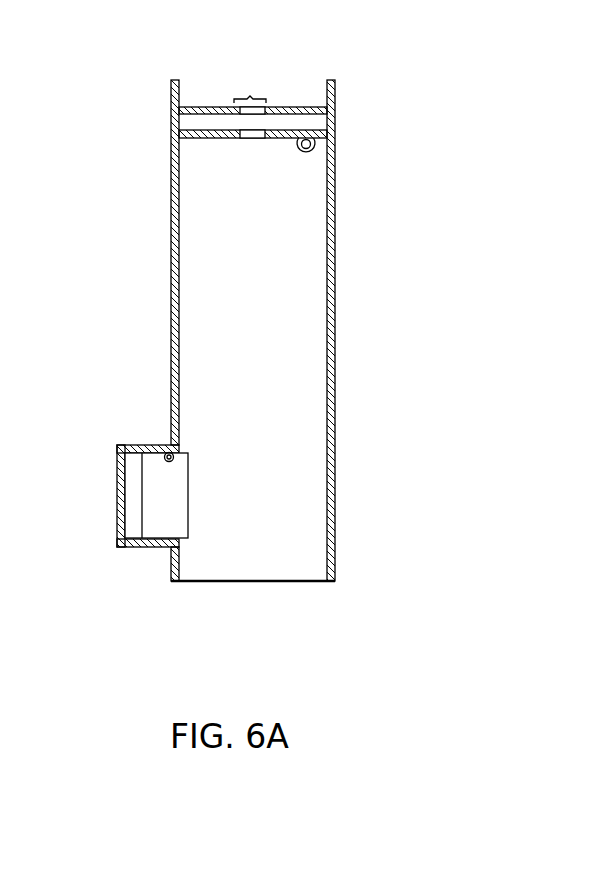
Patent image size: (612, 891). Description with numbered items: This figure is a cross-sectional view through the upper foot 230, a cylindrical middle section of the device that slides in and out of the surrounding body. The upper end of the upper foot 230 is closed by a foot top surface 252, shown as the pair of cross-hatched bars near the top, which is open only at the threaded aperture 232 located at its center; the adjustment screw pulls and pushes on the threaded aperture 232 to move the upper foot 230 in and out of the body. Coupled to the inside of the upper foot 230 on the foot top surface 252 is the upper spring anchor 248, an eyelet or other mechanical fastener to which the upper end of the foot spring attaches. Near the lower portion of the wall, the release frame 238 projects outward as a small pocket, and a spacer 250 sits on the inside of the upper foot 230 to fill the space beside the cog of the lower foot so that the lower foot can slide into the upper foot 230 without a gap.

The upper foot 230 is at (335, 236).
The threaded aperture 232 is at (250, 96).
The release frame 238 is at (117, 515).
The upper spring anchor 248 is at (311, 151).
The spacer 250 is at (188, 468).
The foot top surface 252 is at (340, 137).